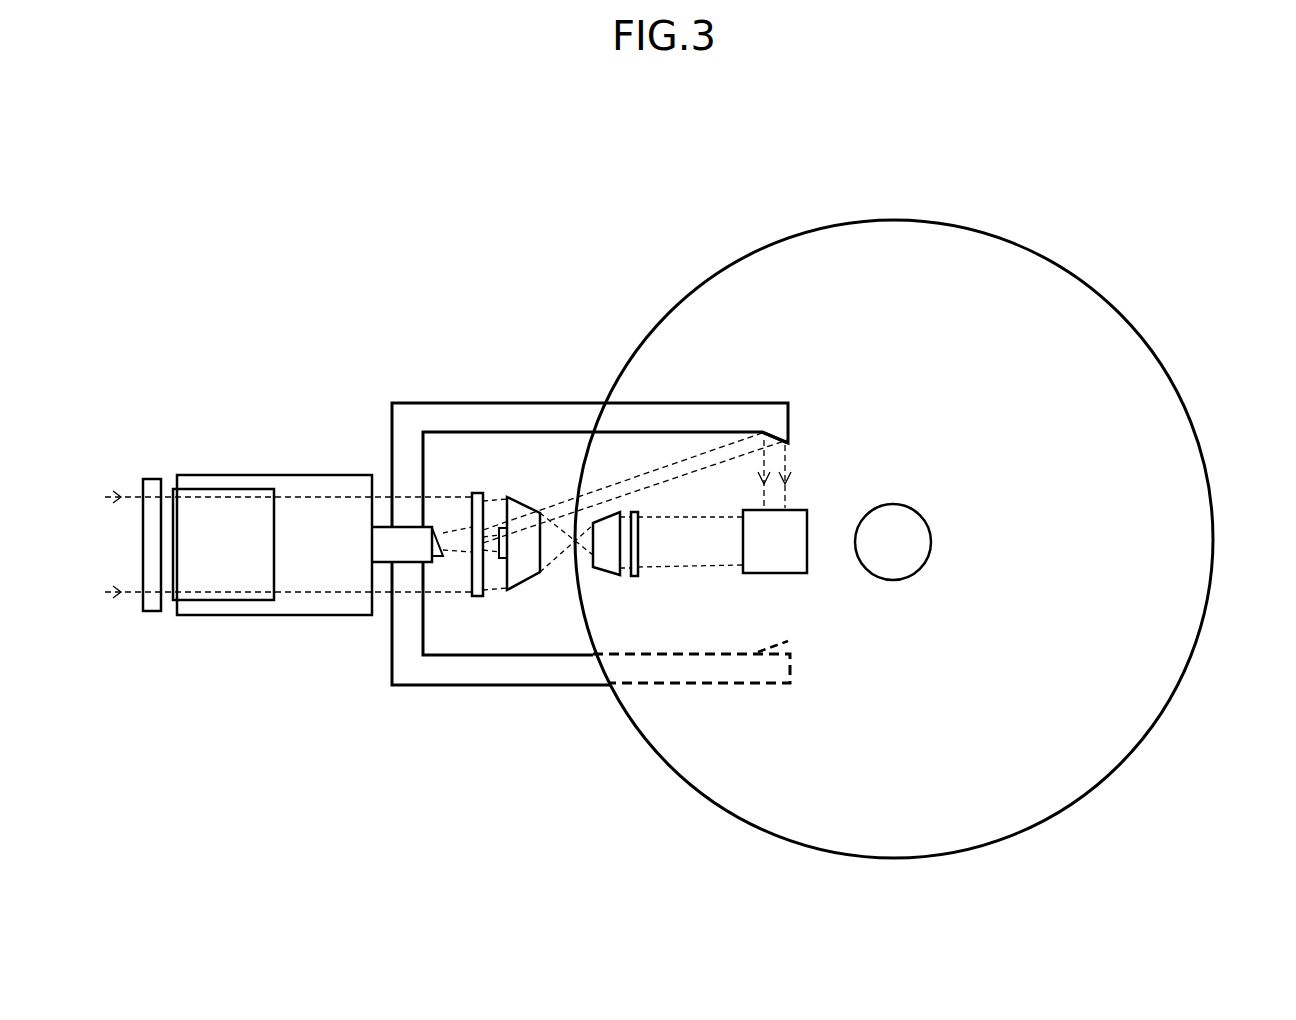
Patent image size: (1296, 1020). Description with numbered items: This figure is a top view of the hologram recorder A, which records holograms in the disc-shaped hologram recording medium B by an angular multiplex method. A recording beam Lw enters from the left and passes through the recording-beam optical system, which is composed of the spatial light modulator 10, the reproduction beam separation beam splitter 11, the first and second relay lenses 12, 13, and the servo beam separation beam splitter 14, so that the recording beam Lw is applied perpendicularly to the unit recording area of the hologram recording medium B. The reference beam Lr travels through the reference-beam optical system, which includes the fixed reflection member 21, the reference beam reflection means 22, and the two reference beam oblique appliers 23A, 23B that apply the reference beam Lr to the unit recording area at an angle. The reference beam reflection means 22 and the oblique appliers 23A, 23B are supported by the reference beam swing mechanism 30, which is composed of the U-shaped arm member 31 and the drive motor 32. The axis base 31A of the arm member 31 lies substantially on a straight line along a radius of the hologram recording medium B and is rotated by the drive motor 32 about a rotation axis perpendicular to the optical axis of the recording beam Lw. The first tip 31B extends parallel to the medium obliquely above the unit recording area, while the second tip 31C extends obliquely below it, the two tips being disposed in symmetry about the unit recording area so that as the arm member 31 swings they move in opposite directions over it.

The spatial light modulator 10 is at (152, 490).
The reproduction beam separation beam splitter 11 is at (213, 503).
The first relay lens 12 is at (519, 552).
The second relay lens 13 is at (633, 512).
The servo beam separation beam splitter 14 is at (797, 565).
The fixed reflection member 21 is at (500, 594).
The reference beam reflection means 22 is at (480, 597).
The reference beam oblique applier 23A is at (790, 438).
The reference beam oblique applier 23B is at (795, 641).
The reference beam swing mechanism 30 is at (483, 616).
The arm member 31 is at (393, 687).
The axis base 31A is at (403, 550).
The first tip 31B is at (773, 410).
The second tip 31C is at (777, 685).
The drive motor 32 is at (247, 615).
The hologram recorder A is at (358, 306).
The hologram recording medium B is at (1193, 537).
The recording beam Lw is at (320, 495).
The reference beam Lr is at (672, 466).